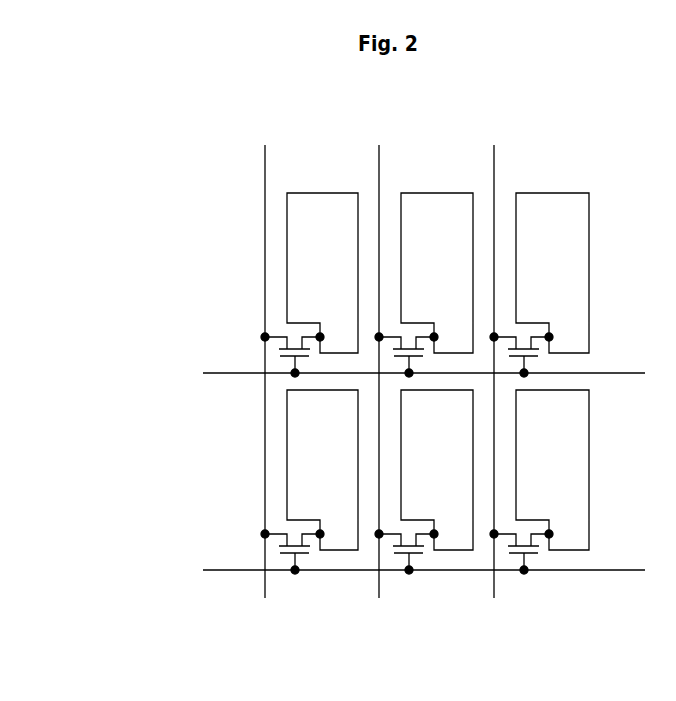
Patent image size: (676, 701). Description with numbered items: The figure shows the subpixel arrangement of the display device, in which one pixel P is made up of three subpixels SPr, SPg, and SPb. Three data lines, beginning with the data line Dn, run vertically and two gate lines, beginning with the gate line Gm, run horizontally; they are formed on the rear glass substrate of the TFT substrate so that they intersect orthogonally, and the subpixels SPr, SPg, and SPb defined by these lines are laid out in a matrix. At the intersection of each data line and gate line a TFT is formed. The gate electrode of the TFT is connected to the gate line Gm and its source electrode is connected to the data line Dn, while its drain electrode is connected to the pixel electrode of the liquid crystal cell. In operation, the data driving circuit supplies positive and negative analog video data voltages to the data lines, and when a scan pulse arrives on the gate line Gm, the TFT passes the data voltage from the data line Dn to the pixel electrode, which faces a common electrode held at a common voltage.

The pixel P is at (185, 104).
The data line Dn is at (263, 360).
The gate line Gm is at (401, 373).
The red subpixel SPr is at (340, 276).
The green subpixel SPg is at (455, 276).
The blue subpixel SPb is at (572, 276).
The thin film transistor TFT is at (278, 352).